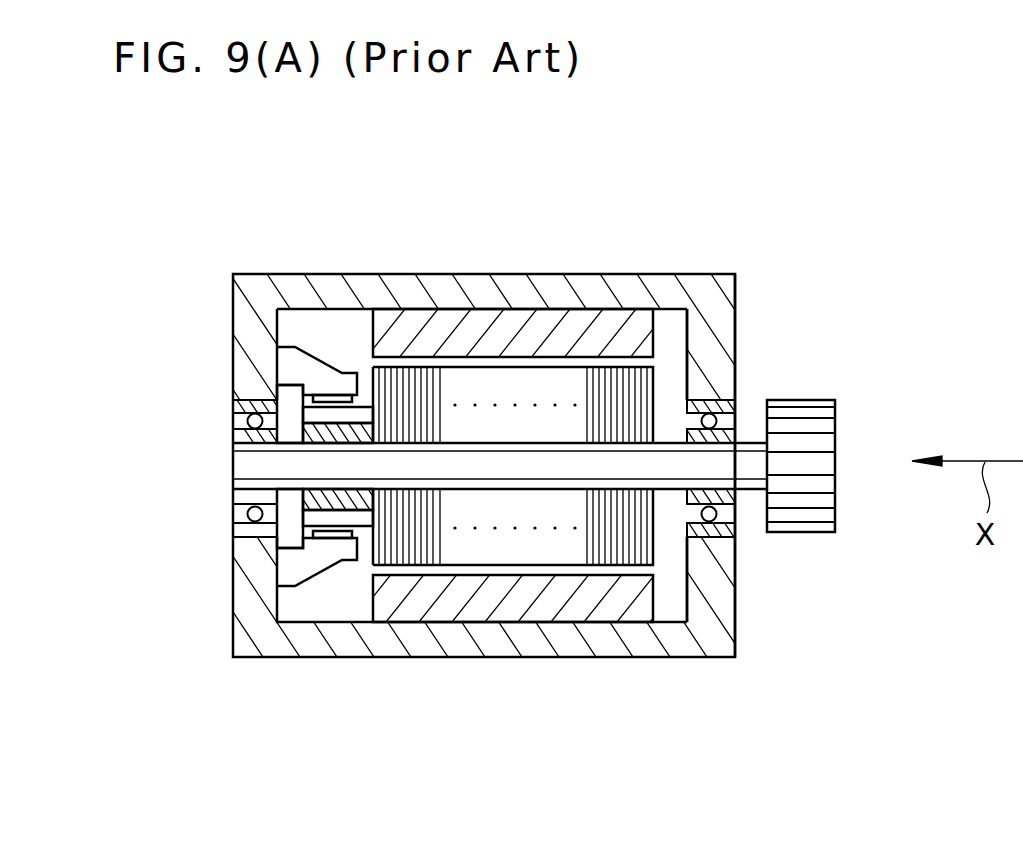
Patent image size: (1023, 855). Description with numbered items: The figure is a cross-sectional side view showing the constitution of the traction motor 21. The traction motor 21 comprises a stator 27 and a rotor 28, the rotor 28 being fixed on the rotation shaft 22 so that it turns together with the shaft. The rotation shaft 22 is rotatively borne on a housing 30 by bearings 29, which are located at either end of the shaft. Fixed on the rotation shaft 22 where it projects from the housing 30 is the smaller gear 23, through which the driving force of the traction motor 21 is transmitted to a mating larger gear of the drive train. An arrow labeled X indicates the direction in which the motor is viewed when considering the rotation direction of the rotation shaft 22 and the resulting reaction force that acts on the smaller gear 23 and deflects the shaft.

The traction motor 21 is at (267, 262).
The rotation shaft 22 is at (241, 470).
The smaller gear 23 is at (800, 399).
The stator 27 is at (528, 315).
The rotor 28 is at (578, 555).
The bearings 29 is at (234, 404).
The housing 30 is at (683, 273).